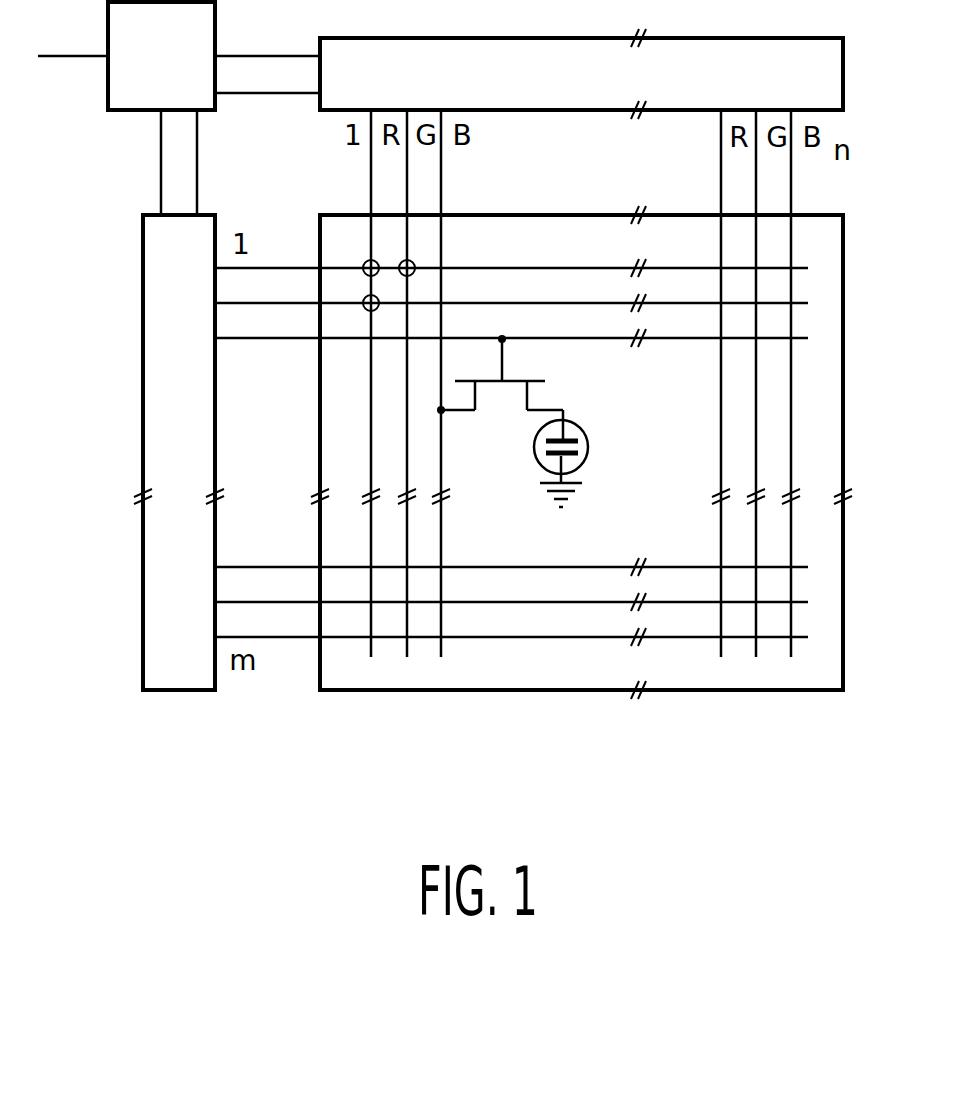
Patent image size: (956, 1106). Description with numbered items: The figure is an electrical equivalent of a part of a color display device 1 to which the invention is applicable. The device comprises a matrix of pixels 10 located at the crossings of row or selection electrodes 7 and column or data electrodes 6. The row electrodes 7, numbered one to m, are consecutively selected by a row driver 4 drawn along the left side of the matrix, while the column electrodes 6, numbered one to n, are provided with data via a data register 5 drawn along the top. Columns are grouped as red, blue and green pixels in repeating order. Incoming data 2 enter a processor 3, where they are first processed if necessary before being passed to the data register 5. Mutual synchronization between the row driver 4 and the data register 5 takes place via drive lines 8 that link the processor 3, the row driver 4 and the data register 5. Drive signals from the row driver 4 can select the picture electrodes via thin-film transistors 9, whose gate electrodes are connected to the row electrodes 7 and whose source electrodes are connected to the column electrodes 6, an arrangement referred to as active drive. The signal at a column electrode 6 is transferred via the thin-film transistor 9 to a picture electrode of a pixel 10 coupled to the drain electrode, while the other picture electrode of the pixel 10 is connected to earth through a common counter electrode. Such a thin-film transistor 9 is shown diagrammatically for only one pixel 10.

The color display device 1 is at (92, 630).
The incoming data 2 is at (61, 58).
The processor 3 is at (108, 24).
The row driver 4 is at (143, 288).
The data register 5 is at (536, 103).
The column electrodes 6 is at (441, 247).
The row electrodes 7 is at (681, 266).
The drive lines 8 is at (252, 95).
The thin-film transistor 9 is at (512, 376).
The pixel 10 is at (367, 258).